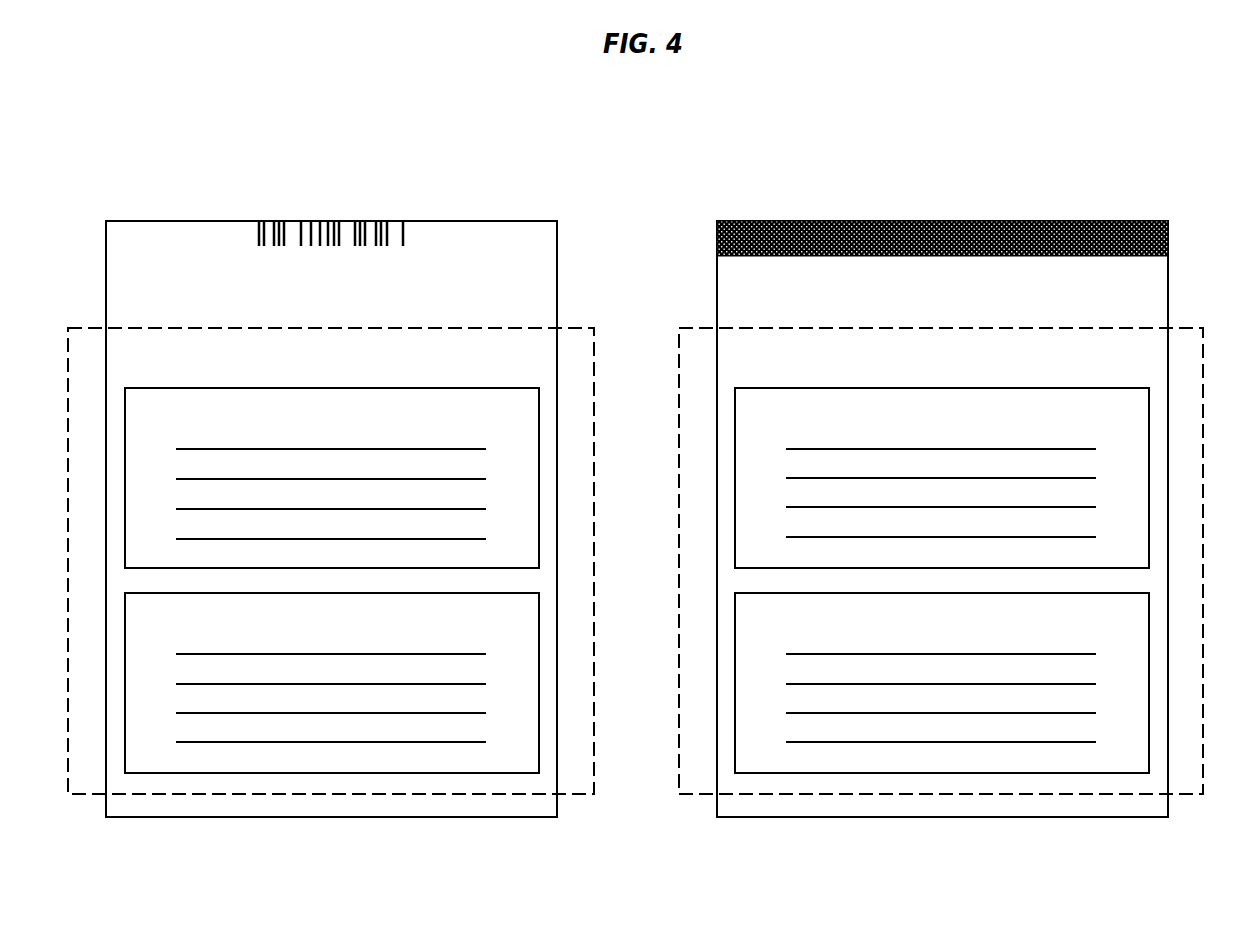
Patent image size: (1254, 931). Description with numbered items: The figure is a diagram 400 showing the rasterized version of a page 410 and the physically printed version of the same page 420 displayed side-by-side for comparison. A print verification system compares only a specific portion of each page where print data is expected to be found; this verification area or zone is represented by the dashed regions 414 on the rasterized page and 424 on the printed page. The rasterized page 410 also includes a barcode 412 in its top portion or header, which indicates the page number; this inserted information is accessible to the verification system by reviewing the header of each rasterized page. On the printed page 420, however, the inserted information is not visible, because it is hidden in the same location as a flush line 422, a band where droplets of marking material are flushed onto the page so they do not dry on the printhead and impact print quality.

The diagram 400 is at (957, 115).
The rasterized page 410 is at (320, 817).
The barcode 412 is at (411, 236).
The verification area 414 is at (572, 794).
The printed page 420 is at (825, 817).
The flush line 422 is at (1133, 256).
The verification area 424 is at (700, 327).